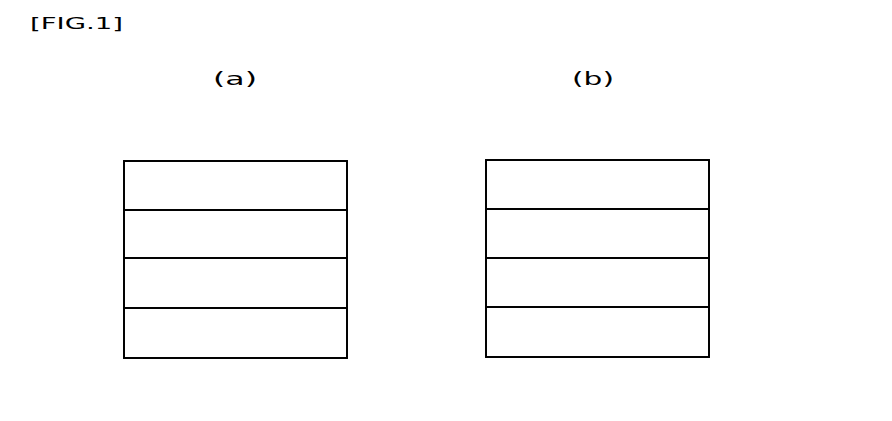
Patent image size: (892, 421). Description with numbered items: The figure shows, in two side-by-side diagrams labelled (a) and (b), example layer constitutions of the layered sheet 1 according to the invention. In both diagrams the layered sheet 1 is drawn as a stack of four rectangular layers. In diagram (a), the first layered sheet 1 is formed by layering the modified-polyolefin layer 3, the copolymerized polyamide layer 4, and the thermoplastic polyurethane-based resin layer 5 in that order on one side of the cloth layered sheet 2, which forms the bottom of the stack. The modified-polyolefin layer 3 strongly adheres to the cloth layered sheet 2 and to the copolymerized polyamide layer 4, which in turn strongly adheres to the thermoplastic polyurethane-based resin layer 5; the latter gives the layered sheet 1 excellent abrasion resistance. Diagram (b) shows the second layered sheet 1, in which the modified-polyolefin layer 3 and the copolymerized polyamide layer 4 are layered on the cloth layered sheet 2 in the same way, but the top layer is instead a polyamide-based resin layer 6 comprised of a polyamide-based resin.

The layered sheet 1 is at (346, 141).
The cloth layered sheet 2 is at (330, 338).
The modified-polyolefin layer 3 is at (330, 288).
The copolymerized polyamide layer 4 is at (330, 239).
The thermoplastic polyurethane-based resin layer 5 is at (330, 190).
The polyamide-based resin layer 6 is at (693, 190).